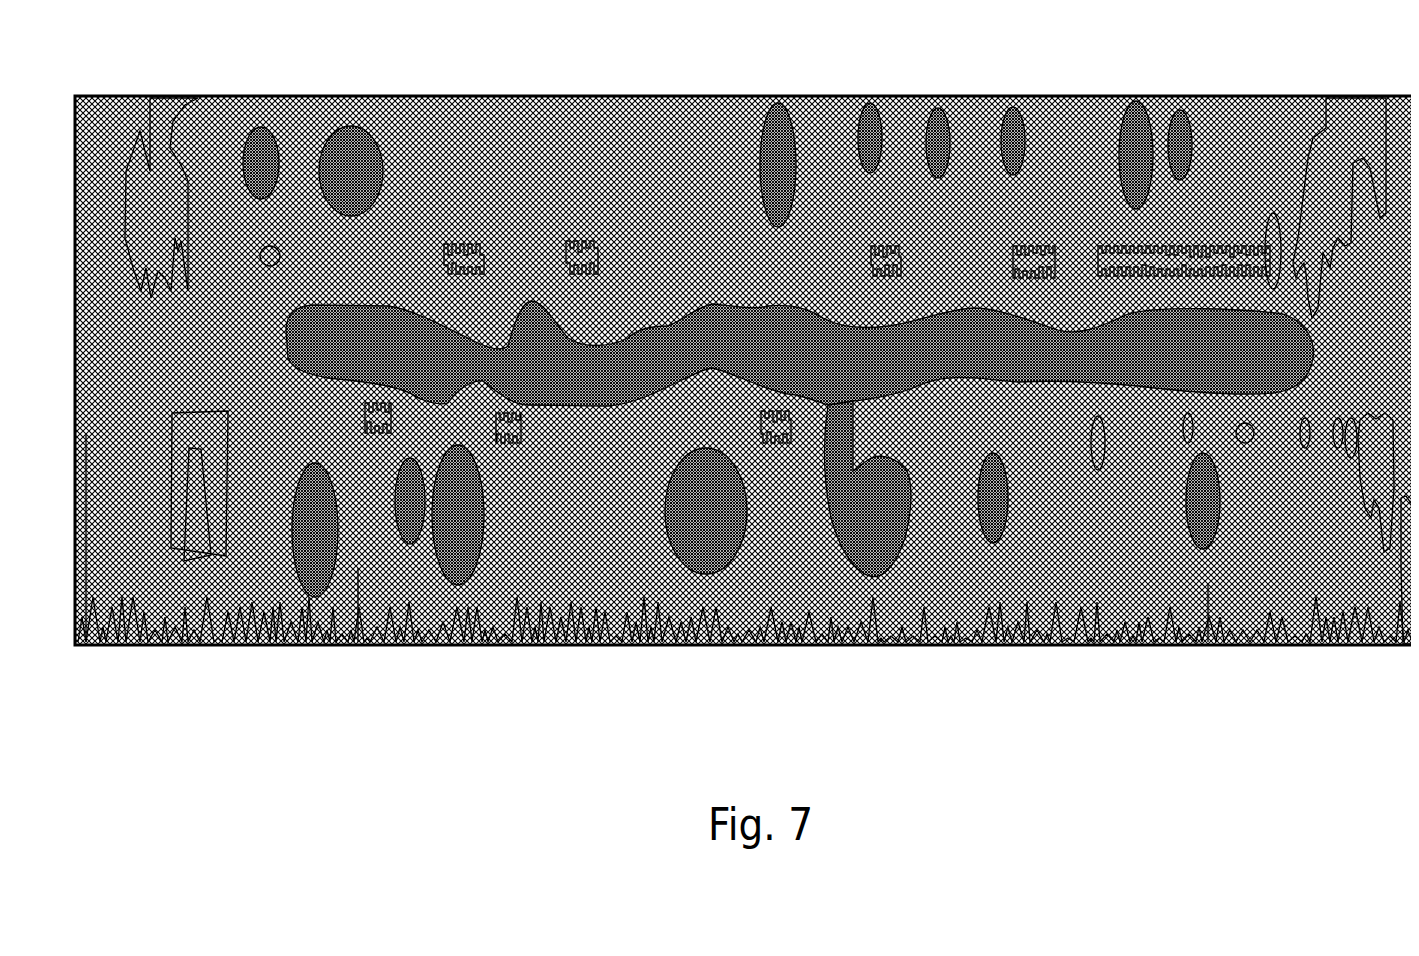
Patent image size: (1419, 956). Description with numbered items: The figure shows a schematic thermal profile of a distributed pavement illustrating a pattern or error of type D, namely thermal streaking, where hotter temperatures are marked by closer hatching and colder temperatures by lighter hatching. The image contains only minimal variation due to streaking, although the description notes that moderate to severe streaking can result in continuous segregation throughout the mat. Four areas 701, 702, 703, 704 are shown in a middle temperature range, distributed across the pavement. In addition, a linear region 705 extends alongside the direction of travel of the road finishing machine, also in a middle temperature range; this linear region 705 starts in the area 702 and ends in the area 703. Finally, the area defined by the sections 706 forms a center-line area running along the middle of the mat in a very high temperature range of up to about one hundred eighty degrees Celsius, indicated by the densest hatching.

The area in middle temperature range 701 is at (1387, 572).
The area in middle temperature range 702 is at (1330, 142).
The area in middle temperature range 703 is at (145, 175).
The area in middle temperature range 704 is at (200, 532).
The linear region 705 is at (1035, 246).
The center-line area sections 706 is at (722, 350).